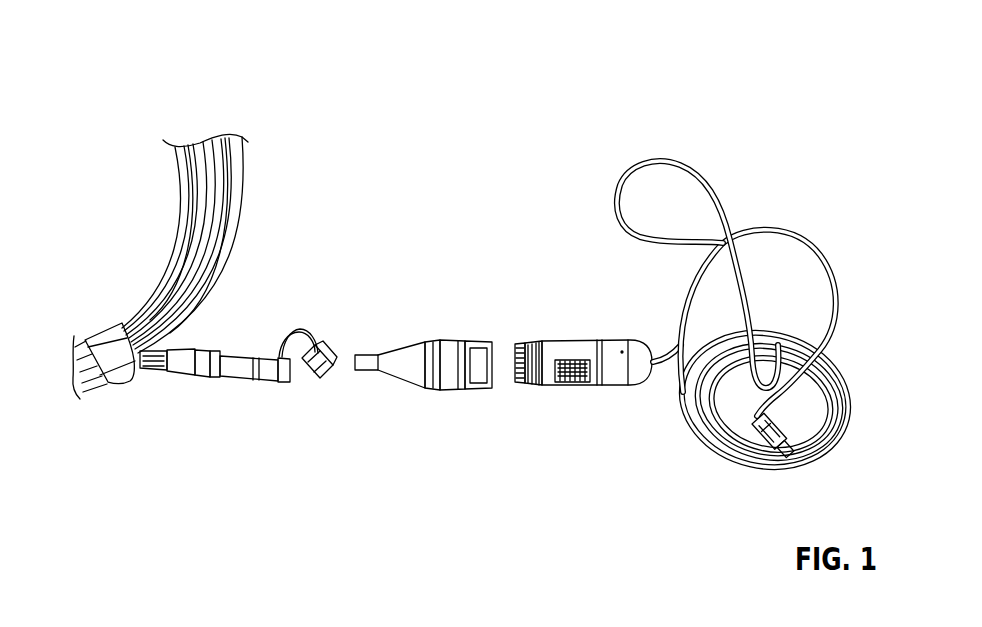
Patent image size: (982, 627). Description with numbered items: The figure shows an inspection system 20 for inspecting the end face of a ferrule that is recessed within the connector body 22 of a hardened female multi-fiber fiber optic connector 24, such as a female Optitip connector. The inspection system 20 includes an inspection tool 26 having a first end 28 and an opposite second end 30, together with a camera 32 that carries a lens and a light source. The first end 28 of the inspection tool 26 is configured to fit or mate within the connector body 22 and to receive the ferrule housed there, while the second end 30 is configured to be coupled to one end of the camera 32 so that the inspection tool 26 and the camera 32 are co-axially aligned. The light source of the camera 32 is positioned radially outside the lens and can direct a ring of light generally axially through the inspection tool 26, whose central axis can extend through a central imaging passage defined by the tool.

The inspection system 20 is at (124, 70).
The connector body 22 is at (256, 354).
The hardened female multi-fiber fiber optic connector 24 is at (224, 318).
The inspection tool 26 is at (443, 333).
The first end 28 is at (357, 351).
The second end 30 is at (483, 340).
The camera 32 is at (572, 335).